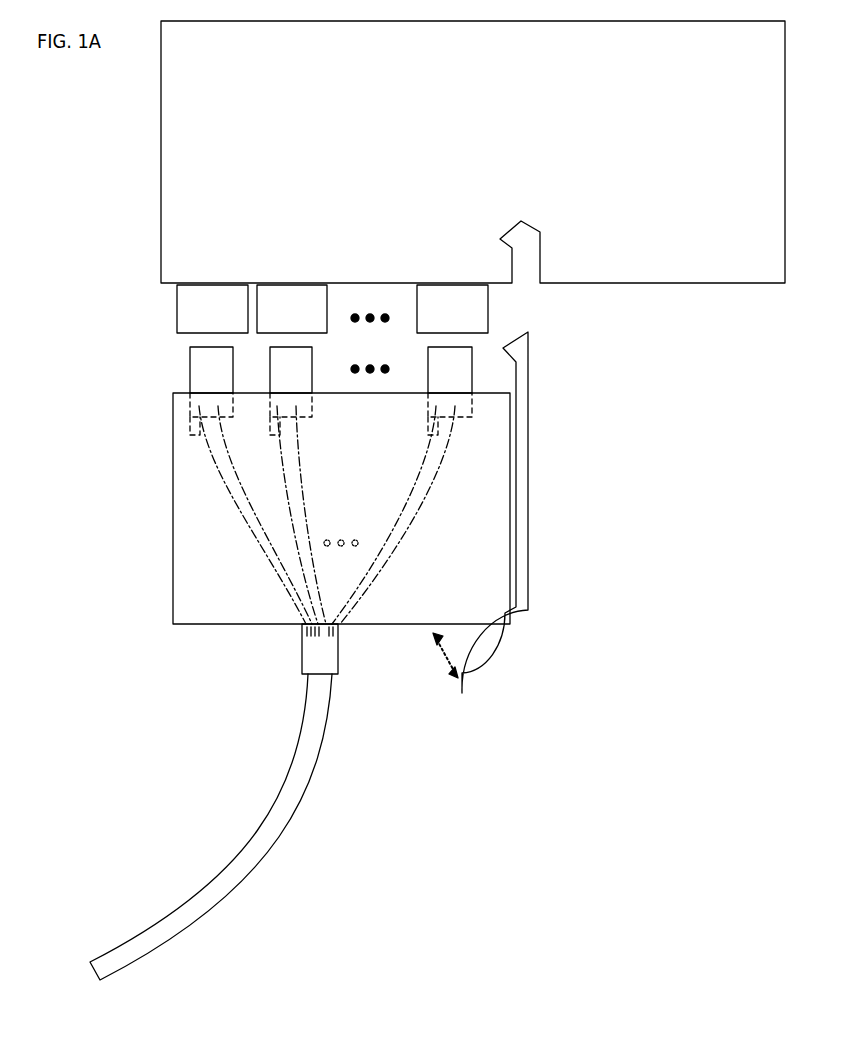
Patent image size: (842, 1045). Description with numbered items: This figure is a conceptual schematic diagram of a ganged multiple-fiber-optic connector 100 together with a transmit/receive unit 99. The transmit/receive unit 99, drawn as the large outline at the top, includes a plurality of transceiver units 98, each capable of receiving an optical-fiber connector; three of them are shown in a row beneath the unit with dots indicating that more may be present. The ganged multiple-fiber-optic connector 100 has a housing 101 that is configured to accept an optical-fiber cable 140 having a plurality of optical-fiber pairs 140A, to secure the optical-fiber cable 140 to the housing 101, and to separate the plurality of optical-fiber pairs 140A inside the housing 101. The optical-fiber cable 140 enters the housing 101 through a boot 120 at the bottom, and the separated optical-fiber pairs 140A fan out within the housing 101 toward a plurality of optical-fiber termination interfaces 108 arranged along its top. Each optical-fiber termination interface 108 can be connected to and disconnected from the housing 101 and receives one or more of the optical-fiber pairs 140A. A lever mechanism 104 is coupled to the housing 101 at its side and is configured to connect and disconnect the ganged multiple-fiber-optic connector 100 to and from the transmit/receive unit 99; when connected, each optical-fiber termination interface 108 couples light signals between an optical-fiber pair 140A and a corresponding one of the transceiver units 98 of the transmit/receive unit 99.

The transmit/receive unit 99 is at (108, 199).
The ganged multiple-fiber-optic connector 100 is at (82, 334).
The transceiver units 98 is at (177, 316).
The optical-fiber termination interfaces 108 is at (190, 372).
The housing 101 is at (173, 434).
The optical-fiber pairs 140A is at (258, 530).
The lever mechanism 104 is at (528, 648).
The boot 120 is at (302, 655).
The optical-fiber cable 140 is at (298, 748).